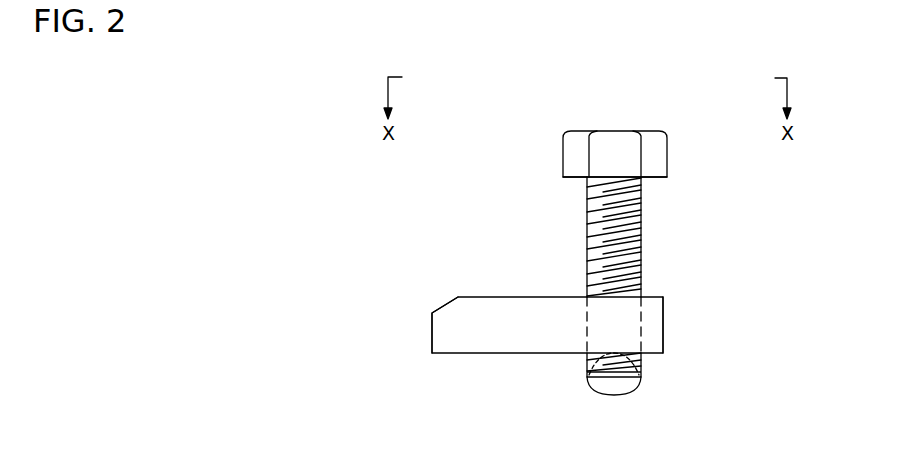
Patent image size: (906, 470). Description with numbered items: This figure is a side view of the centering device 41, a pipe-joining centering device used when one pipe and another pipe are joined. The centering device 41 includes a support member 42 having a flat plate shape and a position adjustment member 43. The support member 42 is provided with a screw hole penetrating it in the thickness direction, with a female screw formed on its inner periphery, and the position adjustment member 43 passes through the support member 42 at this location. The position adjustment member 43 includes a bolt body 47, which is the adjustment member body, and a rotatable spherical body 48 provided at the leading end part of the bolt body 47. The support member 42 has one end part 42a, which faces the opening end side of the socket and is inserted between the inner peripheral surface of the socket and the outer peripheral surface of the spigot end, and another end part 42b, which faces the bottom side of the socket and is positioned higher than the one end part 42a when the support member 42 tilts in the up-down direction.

The centering device 41 is at (661, 258).
The support member 42 is at (554, 299).
The one end part 42a is at (432, 329).
The other end part 42b is at (663, 318).
The position adjustment member 43 is at (622, 120).
The bolt body 47 is at (641, 263).
The spherical body 48 is at (613, 385).